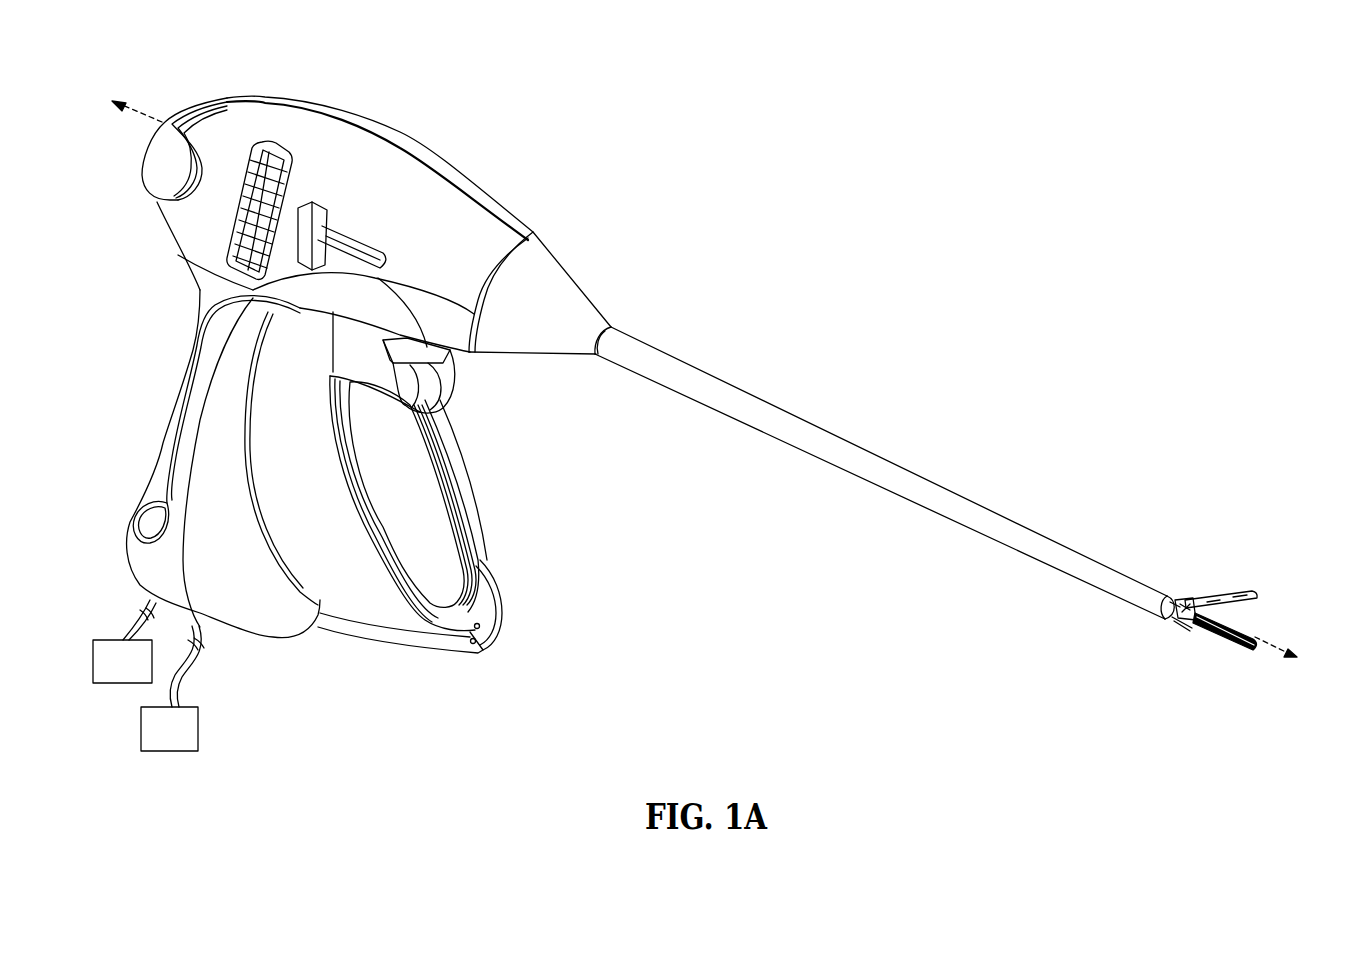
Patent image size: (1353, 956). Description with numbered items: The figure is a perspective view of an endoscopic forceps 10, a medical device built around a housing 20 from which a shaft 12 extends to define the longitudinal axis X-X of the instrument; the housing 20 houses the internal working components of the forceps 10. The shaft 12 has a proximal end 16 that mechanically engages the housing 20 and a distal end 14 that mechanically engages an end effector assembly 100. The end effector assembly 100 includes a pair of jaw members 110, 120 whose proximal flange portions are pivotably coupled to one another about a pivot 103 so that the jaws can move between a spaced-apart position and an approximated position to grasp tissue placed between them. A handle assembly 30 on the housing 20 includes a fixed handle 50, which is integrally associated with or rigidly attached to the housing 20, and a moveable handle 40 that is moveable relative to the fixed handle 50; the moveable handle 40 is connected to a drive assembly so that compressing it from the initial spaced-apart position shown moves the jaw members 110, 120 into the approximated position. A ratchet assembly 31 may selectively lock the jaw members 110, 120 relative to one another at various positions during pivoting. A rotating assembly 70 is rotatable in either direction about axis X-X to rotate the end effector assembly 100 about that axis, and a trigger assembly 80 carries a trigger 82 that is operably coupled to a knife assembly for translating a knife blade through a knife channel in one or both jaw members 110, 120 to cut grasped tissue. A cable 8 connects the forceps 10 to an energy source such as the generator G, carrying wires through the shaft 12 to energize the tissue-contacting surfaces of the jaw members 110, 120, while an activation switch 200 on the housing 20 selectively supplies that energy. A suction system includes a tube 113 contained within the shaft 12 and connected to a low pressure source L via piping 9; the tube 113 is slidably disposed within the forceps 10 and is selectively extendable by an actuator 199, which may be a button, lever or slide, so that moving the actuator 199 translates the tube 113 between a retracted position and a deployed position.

The cable 8 is at (183, 672).
The piping 9 is at (130, 617).
The endoscopic forceps 10 is at (700, 222).
The shaft 12 is at (970, 496).
The distal end 14 is at (1147, 586).
The proximal end 16 is at (640, 350).
The housing 20 is at (488, 204).
The handle assembly 30 is at (433, 675).
The ratchet assembly 31 is at (378, 638).
The moveable handle 40 is at (460, 465).
The fixed handle 50 is at (165, 452).
The rotating assembly 70 is at (278, 148).
The trigger assembly 80 is at (465, 378).
The trigger 82 is at (450, 388).
The end effector assembly 100 is at (1277, 578).
The pivot 103 is at (1166, 612).
The jaw member 110 is at (1260, 594).
The tube 113 is at (1178, 624).
The jaw member 120 is at (1238, 648).
The actuator 199 is at (345, 208).
The activation switch 200 is at (157, 165).